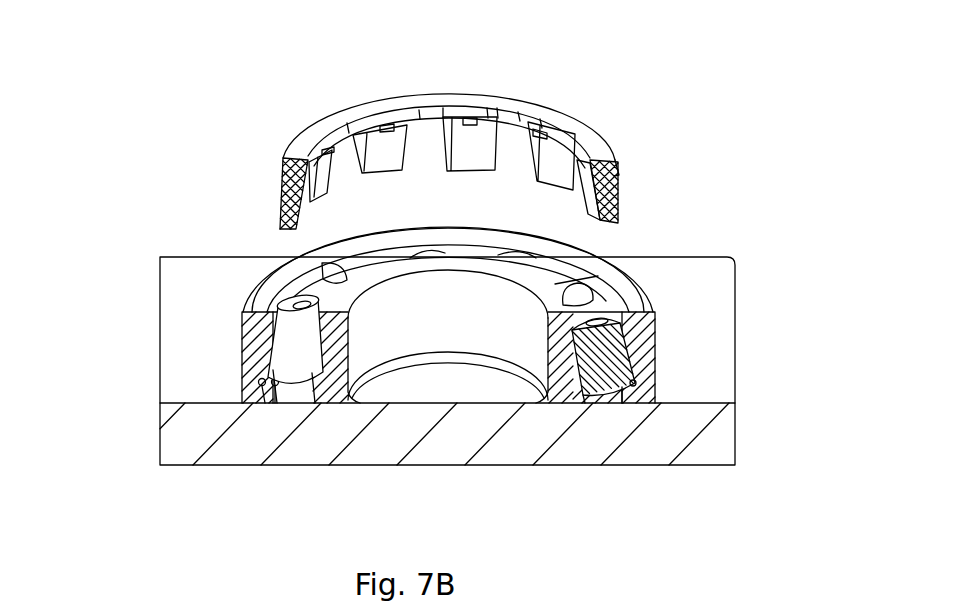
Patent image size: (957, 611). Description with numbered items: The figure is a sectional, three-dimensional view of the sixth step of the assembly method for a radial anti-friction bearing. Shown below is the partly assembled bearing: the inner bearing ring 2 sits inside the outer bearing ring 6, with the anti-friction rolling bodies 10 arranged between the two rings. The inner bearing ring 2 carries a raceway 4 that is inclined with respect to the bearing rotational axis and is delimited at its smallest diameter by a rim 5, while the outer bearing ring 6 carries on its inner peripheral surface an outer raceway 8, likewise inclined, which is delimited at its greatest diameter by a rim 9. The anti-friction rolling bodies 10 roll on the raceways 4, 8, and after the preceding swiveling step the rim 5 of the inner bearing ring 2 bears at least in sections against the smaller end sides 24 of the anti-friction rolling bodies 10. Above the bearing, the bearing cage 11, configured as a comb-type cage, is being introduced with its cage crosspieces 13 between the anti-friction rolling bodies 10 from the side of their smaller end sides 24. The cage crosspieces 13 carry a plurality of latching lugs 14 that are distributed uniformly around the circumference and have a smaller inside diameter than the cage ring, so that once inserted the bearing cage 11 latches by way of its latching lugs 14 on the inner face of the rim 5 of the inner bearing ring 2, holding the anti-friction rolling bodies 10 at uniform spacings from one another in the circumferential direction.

The inner bearing ring 2 is at (565, 283).
The raceway 4 is at (633, 383).
The rim 5 is at (652, 320).
The outer bearing ring 6 is at (267, 278).
The outer raceway 8 is at (248, 318).
The rim 9 is at (267, 396).
The anti-friction rolling bodies 10 is at (333, 273).
The bearing cage 11 is at (393, 98).
The cage crosspieces 13 is at (467, 133).
The latching lugs 14 is at (563, 133).
The smaller end sides 24 is at (593, 303).